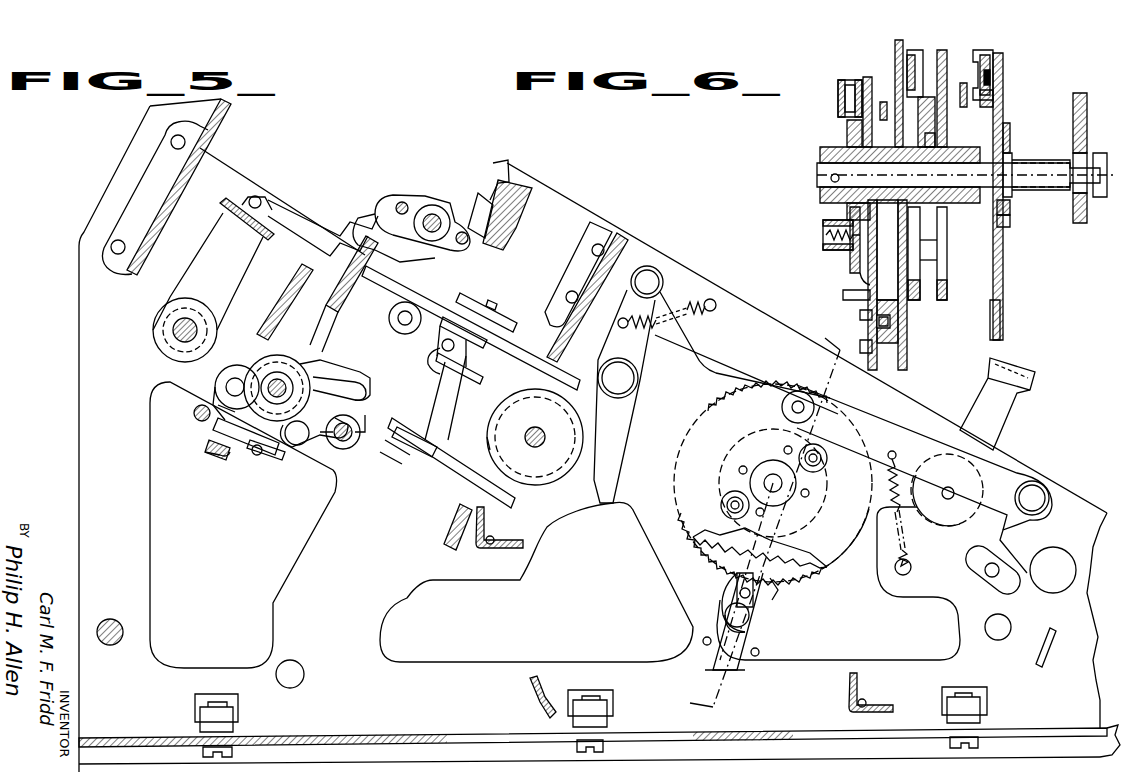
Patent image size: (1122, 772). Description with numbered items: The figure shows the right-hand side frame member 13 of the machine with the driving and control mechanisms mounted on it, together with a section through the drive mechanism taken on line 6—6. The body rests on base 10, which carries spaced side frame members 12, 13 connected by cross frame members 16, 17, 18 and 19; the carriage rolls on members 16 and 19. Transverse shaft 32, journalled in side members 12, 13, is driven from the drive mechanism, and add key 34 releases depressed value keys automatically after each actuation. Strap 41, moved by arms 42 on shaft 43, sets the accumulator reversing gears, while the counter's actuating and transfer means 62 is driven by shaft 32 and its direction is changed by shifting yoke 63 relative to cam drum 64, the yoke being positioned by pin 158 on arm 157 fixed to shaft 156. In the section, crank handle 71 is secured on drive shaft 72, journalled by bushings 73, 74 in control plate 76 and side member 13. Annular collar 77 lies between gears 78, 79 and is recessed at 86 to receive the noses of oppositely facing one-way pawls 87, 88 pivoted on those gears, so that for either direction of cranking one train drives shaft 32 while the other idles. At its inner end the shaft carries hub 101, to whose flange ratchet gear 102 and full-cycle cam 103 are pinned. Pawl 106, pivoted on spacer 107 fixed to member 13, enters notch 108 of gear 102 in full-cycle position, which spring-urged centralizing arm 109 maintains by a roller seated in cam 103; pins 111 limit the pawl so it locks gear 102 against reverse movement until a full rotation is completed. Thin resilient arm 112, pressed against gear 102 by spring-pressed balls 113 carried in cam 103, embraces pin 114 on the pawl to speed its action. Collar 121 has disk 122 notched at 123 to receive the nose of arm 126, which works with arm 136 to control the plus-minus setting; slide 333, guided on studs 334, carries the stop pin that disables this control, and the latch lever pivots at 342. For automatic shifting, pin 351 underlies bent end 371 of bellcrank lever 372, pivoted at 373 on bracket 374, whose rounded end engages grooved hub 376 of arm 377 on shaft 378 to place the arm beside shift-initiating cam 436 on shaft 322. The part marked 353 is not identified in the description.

In FIG. 5, the section line 6 is at (759, 518).
In FIG. 5, the base 10 is at (380, 735).
In FIG. 5, the side frame member 12 is at (252, 333).
In FIG. 5, the side frame member 13 is at (79, 432).
In FIG. 6, the side frame member 13 is at (908, 348).
In FIG. 5, the cross frame member 16 is at (208, 144).
In FIG. 5, the cross frame member 17 is at (345, 280).
In FIG. 5, the cross frame member 18 is at (455, 520).
In FIG. 5, the cross frame member 19 is at (520, 210).
In FIG. 5, the transverse shaft 32 is at (535, 428).
In FIG. 5, the add key 34 is at (1005, 428).
In FIG. 5, the strap 41 is at (225, 205).
In FIG. 5, the arms 42 is at (197, 262).
In FIG. 5, the transverse shaft 43 is at (170, 326).
In FIG. 5, the actuating and transfer means 62 is at (414, 195).
In FIG. 5, the collar 63 is at (455, 404).
In FIG. 5, the cam drum 64 is at (536, 485).
In FIG. 6, the crank handle 71 is at (1075, 225).
In FIG. 5, the drive shaft 72 is at (780, 490).
In FIG. 6, the drive shaft 72 is at (815, 170).
In FIG. 6, the bushing 73 is at (1005, 160).
In FIG. 6, the bushing 74 is at (887, 250).
In FIG. 6, the control plate 76 is at (1001, 305).
In FIG. 6, the annular collar 77 is at (921, 222).
In FIG. 6, the gear 78 is at (948, 272).
In FIG. 6, the gear 79 is at (923, 262).
In FIG. 6, the recess 86 is at (935, 138).
In FIG. 6, the pawl 87 is at (937, 117).
In FIG. 6, the pawl 88 is at (905, 75).
In FIG. 5, the hub 101 is at (762, 462).
In FIG. 6, the hub 101 is at (826, 158).
In FIG. 5, the ratchet gear 102 is at (810, 570).
In FIG. 6, the ratchet gear 102 is at (855, 80).
In FIG. 5, the full cycle cam 103 is at (840, 555).
In FIG. 6, the full cycle cam 103 is at (847, 128).
In FIG. 5, the pawl 106 is at (735, 668).
In FIG. 6, the pawl 106 is at (875, 372).
In FIG. 5, the spacer 107 is at (757, 623).
In FIG. 6, the spacer 107 is at (900, 330).
In FIG. 5, the notch 108 is at (772, 593).
In FIG. 5, the centralizing arm 109 is at (886, 425).
In FIG. 6, the centralizing arm 109 is at (838, 100).
In FIG. 5, the pins 111 is at (703, 641).
In FIG. 6, the pins 111 is at (860, 345).
In FIG. 5, the arm 112 is at (720, 572).
In FIG. 6, the arm 112 is at (855, 280).
In FIG. 5, the spring pressed balls 113 is at (728, 500).
In FIG. 6, the spring pressed balls 113 is at (830, 222).
In FIG. 5, the pin 114 is at (740, 593).
In FIG. 6, the pin 114 is at (843, 295).
In FIG. 6, the collar 121 is at (1042, 200).
In FIG. 6, the disk 122 is at (1008, 225).
In FIG. 6, the notch 123 is at (1004, 125).
In FIG. 6, the arm 126 is at (997, 98).
In FIG. 6, the arm 136 is at (993, 78).
In FIG. 5, the shaft 156 is at (408, 310).
In FIG. 5, the arm 157 is at (432, 350).
In FIG. 5, the pin 158 is at (450, 315).
In FIG. 5, the shaft 322 is at (344, 448).
In FIG. 6, the slide 333 is at (993, 60).
In FIG. 6, the studs 334 is at (990, 48).
In FIG. 5, the pivot 342 is at (1038, 488).
In FIG. 5, the pin 351 is at (254, 455).
In FIG. 5, the stud 353 is at (194, 416).
In FIG. 5, the bent end 371 is at (248, 450).
In FIG. 5, the bellcrank lever 372 is at (228, 383).
In FIG. 5, the pivot 373 is at (213, 440).
In FIG. 5, the bracket 374 is at (218, 405).
In FIG. 5, the grooved hub 376 is at (310, 370).
In FIG. 5, the arm 377 is at (362, 388).
In FIG. 5, the shaft 378 is at (280, 378).
In FIG. 5, the shift initiating cam 436 is at (320, 455).